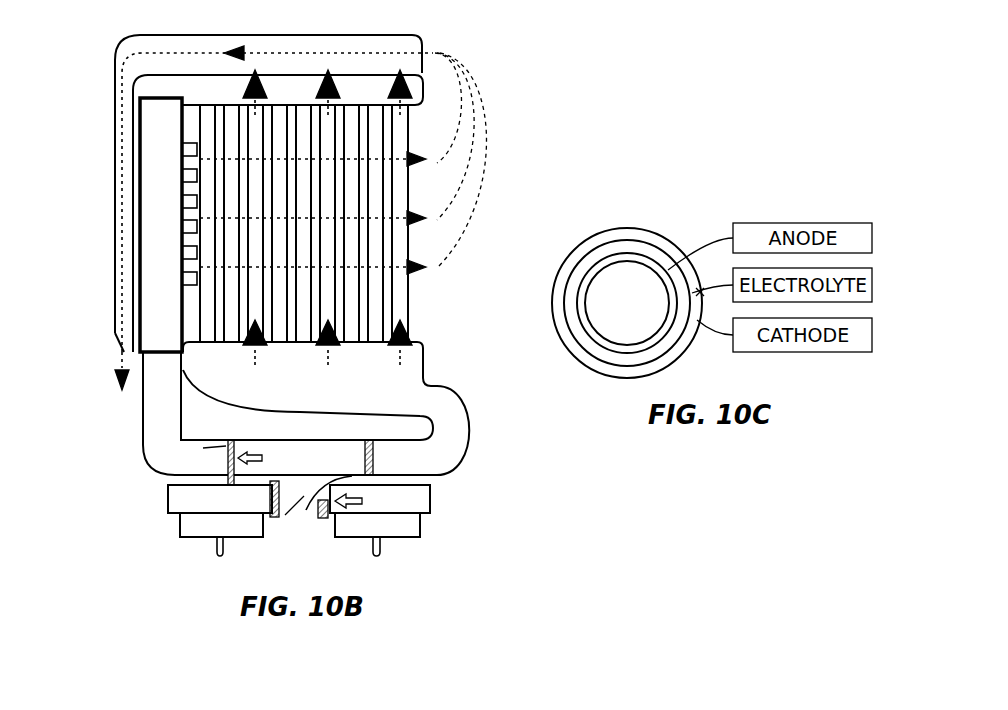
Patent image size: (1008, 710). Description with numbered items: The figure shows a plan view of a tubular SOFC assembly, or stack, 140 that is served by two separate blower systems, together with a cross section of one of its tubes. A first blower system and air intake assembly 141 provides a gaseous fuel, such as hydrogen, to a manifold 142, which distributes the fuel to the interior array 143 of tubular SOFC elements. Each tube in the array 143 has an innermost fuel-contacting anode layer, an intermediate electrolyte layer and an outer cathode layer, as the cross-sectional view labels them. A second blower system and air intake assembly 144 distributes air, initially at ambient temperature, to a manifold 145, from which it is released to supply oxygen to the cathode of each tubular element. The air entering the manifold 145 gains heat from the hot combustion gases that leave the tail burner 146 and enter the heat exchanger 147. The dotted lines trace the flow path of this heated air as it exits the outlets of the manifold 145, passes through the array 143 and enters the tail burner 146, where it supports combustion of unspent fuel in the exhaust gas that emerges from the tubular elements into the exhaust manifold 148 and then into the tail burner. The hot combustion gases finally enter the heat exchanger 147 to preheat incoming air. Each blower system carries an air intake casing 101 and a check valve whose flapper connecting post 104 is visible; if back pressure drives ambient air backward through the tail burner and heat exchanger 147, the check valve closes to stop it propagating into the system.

The tubular SOFC assembly 140 is at (508, 101).
The first blower system and air intake assembly 141 is at (470, 416).
The manifold 142 is at (374, 393).
The interior array of tubular SOFC elements 143 is at (350, 303).
The second blower system and air intake assembly 144 is at (432, 501).
The manifold 145 is at (165, 223).
The tail burner 146 is at (165, 50).
The heat exchanger 147 is at (113, 262).
The exhaust manifold 148 is at (210, 95).
The air intake casing 101 is at (182, 528).
The flapper connecting post 104 is at (217, 548).